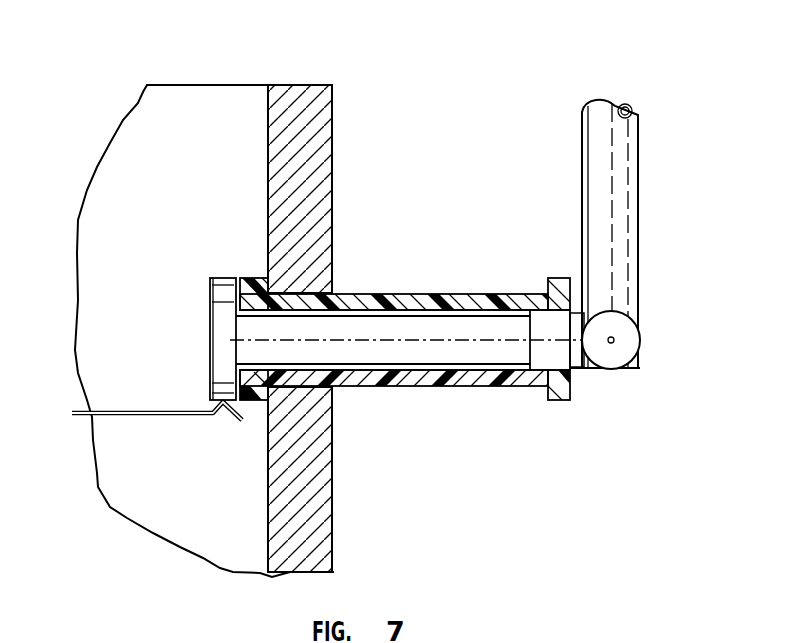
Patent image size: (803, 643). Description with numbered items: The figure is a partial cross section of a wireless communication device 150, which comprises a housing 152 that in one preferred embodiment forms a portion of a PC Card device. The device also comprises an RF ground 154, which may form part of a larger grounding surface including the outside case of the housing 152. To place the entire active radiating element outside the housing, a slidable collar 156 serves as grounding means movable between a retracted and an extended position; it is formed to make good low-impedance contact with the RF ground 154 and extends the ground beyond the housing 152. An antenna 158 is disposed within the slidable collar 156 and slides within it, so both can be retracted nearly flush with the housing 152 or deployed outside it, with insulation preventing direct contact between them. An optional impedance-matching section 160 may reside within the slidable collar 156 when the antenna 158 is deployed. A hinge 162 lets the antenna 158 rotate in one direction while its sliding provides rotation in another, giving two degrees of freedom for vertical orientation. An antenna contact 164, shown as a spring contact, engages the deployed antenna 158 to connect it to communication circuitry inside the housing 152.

The wireless communication device 150 is at (375, 130).
The housing 152 is at (202, 92).
The RF ground 154 is at (312, 185).
The slidable collar 156 is at (418, 380).
The antenna 158 is at (612, 187).
The impedance-matching section 160 is at (557, 352).
The hinge 162 is at (625, 342).
The antenna contact 164 is at (213, 423).